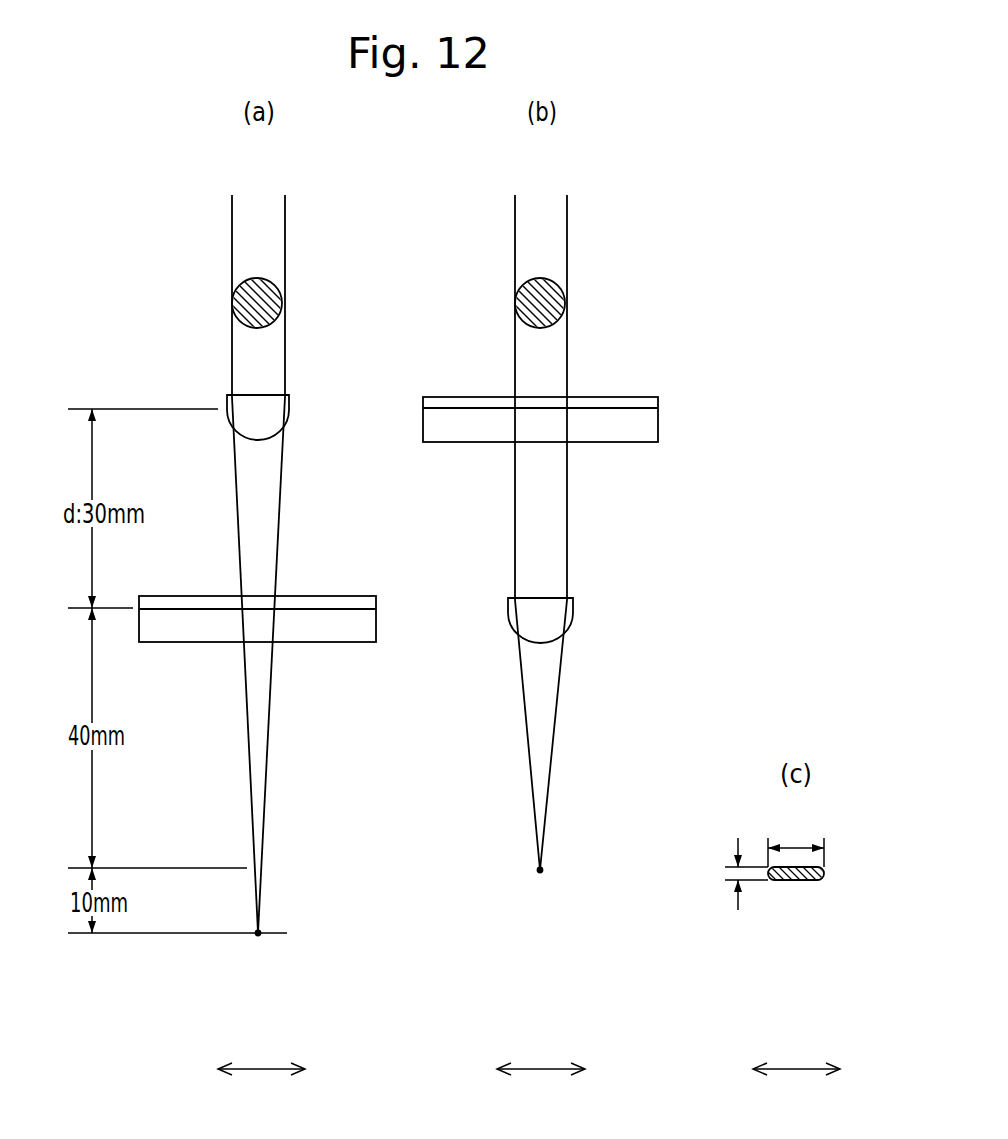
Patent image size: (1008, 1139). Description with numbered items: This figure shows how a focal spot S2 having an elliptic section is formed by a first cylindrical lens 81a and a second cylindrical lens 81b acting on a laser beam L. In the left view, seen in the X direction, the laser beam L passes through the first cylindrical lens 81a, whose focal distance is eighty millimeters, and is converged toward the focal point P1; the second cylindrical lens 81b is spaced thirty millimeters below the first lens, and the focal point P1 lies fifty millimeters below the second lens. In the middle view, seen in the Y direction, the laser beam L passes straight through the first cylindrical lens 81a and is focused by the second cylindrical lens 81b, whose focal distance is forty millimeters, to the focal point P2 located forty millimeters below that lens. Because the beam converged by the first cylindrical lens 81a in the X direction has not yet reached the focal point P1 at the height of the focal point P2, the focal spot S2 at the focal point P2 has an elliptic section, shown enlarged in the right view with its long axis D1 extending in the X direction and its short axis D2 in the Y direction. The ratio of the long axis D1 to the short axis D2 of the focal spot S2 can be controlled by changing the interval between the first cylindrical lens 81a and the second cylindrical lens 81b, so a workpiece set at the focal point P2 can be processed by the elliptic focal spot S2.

The laser beam L is at (285, 233).
The first cylindrical lens 81a is at (290, 405).
The second cylindrical lens 81b is at (376, 613).
The focal spot S2 is at (258, 868).
The focal point P1 is at (258, 933).
The focal point P2 is at (540, 870).
The long axis D1 is at (796, 836).
The short axis D2 is at (746, 857).
The X direction X is at (529, 1088).
The Y direction Y is at (541, 1088).